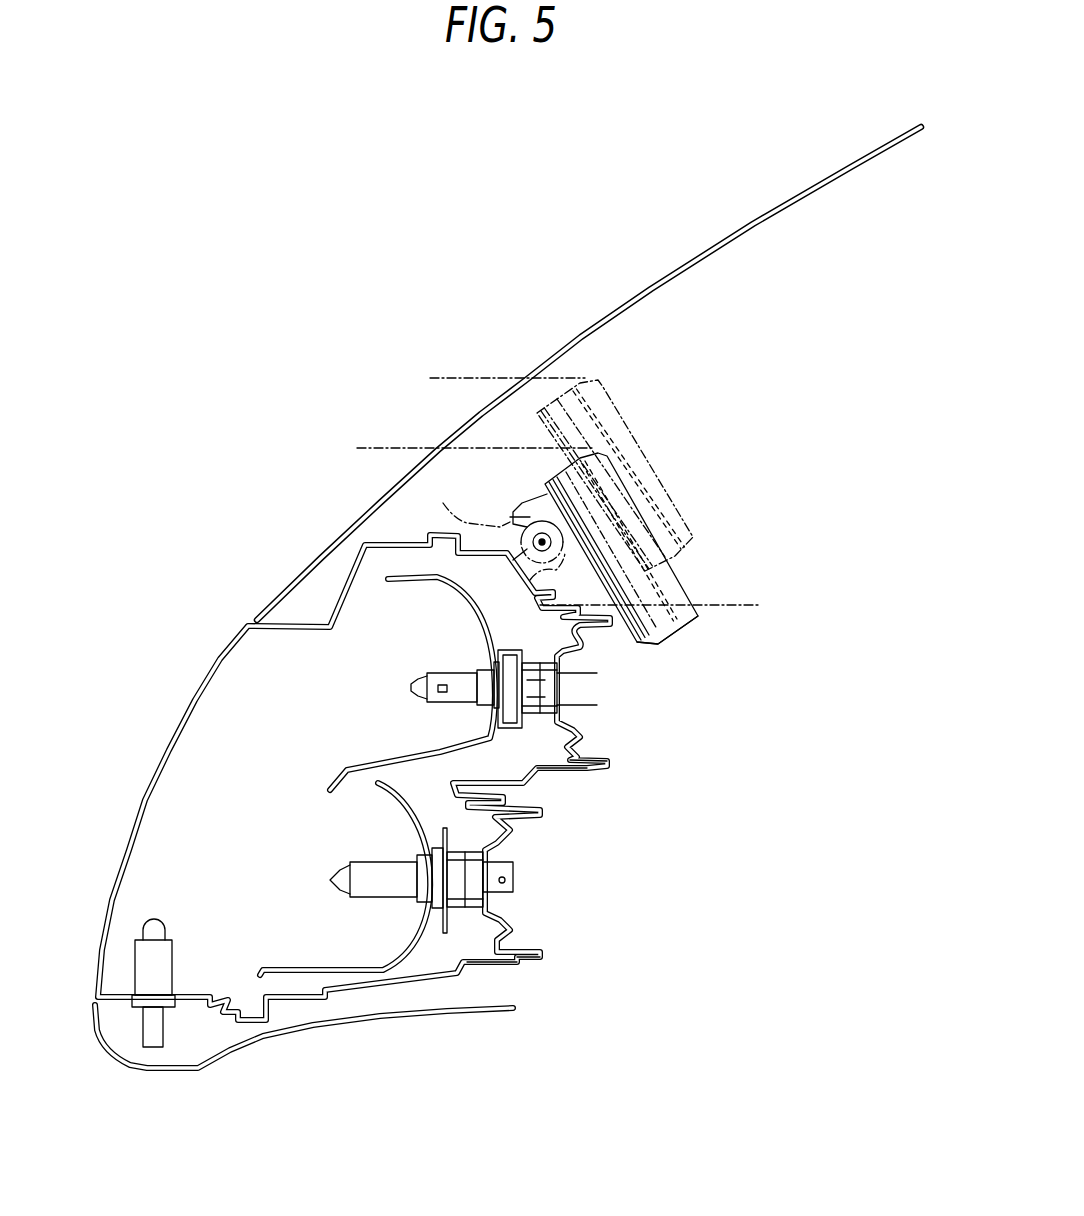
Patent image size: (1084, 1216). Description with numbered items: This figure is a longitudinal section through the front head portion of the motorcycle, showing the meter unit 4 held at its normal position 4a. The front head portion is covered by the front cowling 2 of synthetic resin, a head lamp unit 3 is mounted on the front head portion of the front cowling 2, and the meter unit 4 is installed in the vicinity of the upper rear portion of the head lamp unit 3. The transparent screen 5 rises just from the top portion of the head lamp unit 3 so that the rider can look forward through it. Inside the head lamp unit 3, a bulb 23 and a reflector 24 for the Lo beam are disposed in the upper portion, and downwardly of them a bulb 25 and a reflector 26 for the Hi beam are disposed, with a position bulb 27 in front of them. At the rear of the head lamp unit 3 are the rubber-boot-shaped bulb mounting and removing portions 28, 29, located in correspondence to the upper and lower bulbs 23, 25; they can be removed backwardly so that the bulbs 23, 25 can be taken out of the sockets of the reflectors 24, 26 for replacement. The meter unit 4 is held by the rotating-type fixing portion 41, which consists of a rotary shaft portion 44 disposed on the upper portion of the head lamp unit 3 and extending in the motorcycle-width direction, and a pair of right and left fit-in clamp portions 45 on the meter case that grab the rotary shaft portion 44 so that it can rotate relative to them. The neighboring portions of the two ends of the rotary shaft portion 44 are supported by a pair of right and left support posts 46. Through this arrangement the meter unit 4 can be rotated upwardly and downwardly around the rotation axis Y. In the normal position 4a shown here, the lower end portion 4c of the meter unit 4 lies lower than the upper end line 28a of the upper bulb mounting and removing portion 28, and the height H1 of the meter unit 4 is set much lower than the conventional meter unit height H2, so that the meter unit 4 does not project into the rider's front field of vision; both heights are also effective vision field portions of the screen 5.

The front cowling 2 is at (103, 1047).
The head lamp unit 3 is at (181, 697).
The meter unit 4 is at (750, 492).
The normal position 4a is at (615, 475).
The lower end portion 4c is at (645, 648).
The screen 5 is at (752, 221).
The bulb 23 is at (425, 680).
The reflector 24 is at (390, 757).
The bulb 25 is at (335, 873).
The reflector 26 is at (292, 967).
The side bulb 27 is at (157, 915).
The bulb mounting and removing portion 28 is at (590, 770).
The upper end line 28a is at (670, 605).
The bulb mounting and removing portion 29 is at (517, 960).
The rotating-type fixing portion 41 is at (520, 516).
The rotary shaft portion 44 is at (500, 522).
The fit-in clamp portion 45 is at (530, 580).
The support post 46 is at (471, 501).
The height of the meter unit at the normal position H1 is at (459, 448).
The conventional meter unit height H2 is at (491, 378).
The rotation axis Y is at (513, 560).